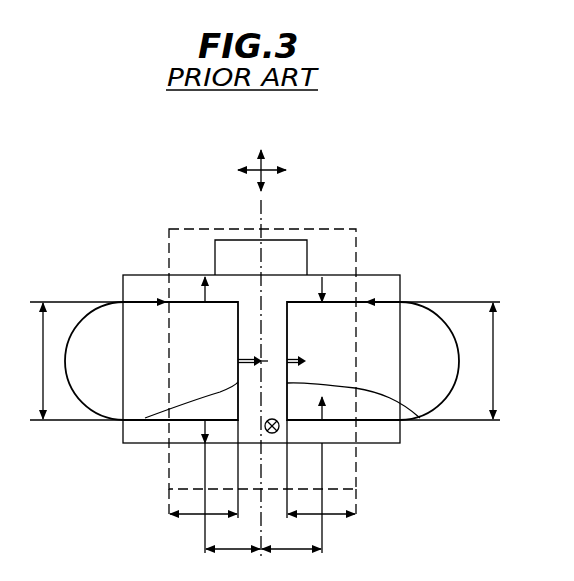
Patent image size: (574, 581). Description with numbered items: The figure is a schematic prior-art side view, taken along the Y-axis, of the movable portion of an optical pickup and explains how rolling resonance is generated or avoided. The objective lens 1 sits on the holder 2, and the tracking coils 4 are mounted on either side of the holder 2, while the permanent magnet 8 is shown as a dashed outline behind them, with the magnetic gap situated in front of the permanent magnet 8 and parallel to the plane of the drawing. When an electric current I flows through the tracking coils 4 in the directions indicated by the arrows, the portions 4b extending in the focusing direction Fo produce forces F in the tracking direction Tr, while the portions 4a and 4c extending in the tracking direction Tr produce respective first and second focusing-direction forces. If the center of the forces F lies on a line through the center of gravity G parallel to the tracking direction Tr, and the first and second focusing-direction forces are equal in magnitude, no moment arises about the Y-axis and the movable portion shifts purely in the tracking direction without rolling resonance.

The objective lens 1 is at (307, 240).
The holder 2 is at (378, 275).
The tracking coils 4 is at (82, 317).
The portion of tracking coil extending in tracking direction 4a is at (183, 301).
The portion of tracking coil extending in focusing direction 4b is at (145, 418).
The portion of tracking coil extending in tracking direction 4c is at (191, 420).
The permanent magnet 8 is at (356, 229).